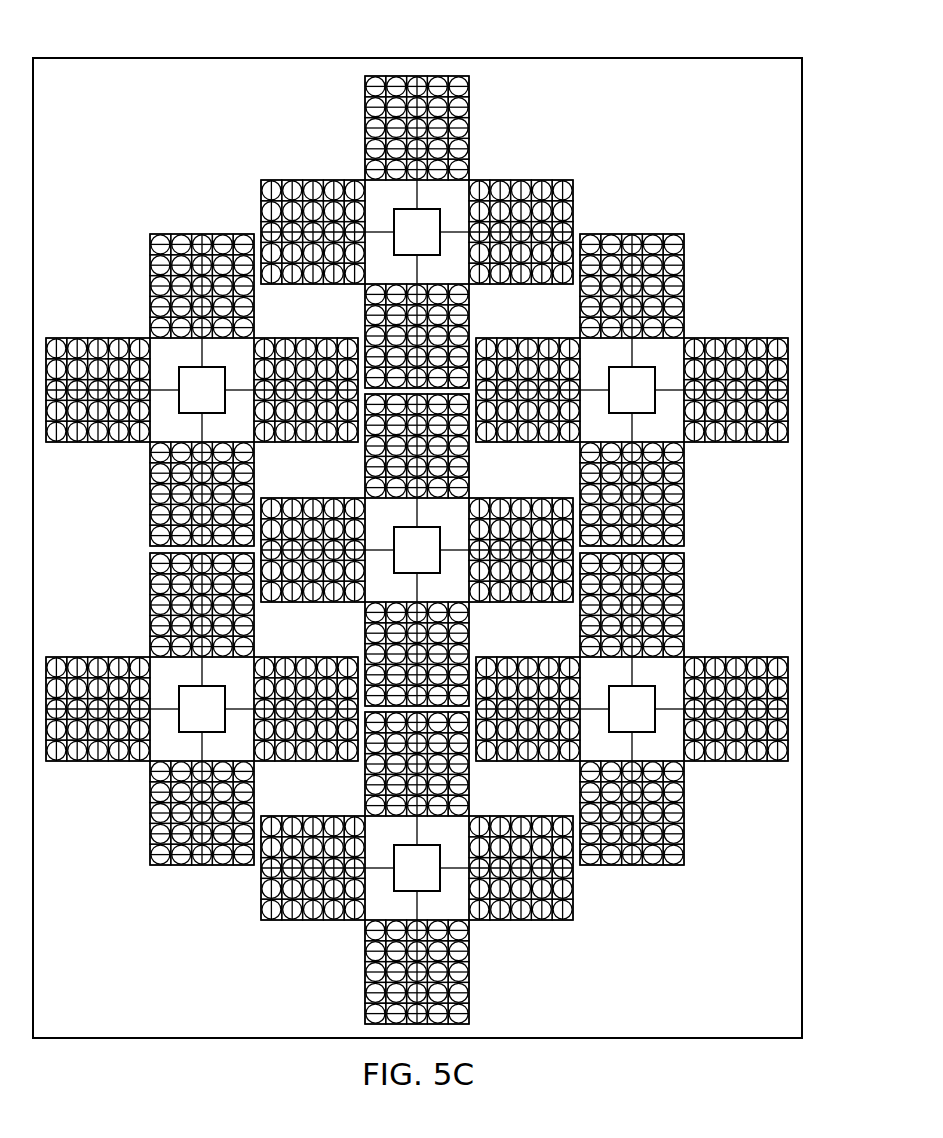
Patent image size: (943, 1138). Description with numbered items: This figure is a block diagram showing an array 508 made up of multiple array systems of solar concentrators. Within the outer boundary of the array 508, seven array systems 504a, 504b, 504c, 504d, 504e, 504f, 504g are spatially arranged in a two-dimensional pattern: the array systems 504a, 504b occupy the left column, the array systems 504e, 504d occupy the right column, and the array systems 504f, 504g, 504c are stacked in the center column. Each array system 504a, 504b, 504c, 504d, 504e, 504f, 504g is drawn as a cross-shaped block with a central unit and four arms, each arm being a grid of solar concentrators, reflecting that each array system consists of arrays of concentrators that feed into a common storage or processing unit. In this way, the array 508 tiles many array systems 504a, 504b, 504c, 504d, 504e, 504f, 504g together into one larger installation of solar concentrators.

The array of array systems 508 is at (601, 56).
The array system 504a is at (110, 303).
The array system 504b is at (109, 799).
The array system 504c is at (499, 943).
The array system 504d is at (724, 799).
The array system 504e is at (724, 303).
The array system 504f is at (499, 156).
The array system 504g is at (342, 613).